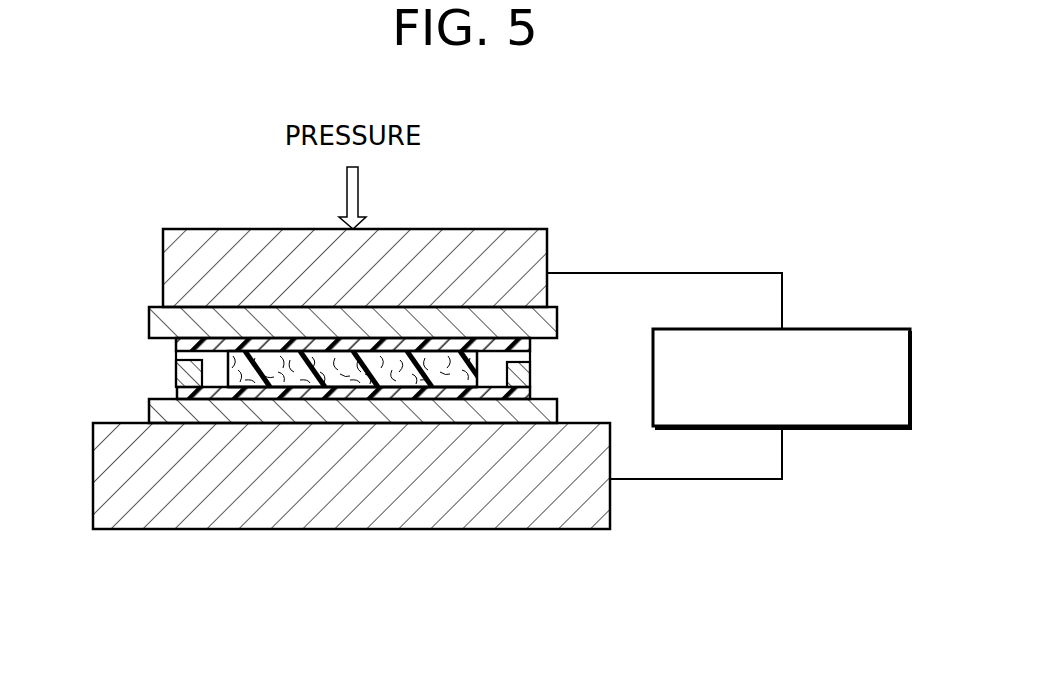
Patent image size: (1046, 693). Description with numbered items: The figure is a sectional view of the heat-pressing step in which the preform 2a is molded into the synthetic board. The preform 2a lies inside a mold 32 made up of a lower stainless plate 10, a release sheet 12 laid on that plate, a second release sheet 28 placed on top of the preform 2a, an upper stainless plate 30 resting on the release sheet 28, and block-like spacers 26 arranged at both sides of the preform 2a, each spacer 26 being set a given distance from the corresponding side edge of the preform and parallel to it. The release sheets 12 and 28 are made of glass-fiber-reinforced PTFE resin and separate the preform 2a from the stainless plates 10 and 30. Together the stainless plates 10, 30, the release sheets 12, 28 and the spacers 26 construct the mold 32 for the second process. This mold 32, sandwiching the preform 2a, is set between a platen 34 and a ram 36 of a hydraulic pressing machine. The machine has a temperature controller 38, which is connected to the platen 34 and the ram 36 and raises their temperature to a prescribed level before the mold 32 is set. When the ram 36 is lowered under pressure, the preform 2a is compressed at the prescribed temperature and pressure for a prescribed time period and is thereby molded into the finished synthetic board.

The preform 2a is at (413, 372).
The stainless plate 10 is at (557, 412).
The release sheet 12 is at (328, 390).
The spacer 26 is at (176, 367).
The release sheet 28 is at (176, 343).
The stainless plate 30 is at (149, 318).
The mold 32 is at (268, 456).
The platen 34 is at (610, 505).
The ram 36 is at (547, 246).
The temperature controller 38 is at (877, 328).